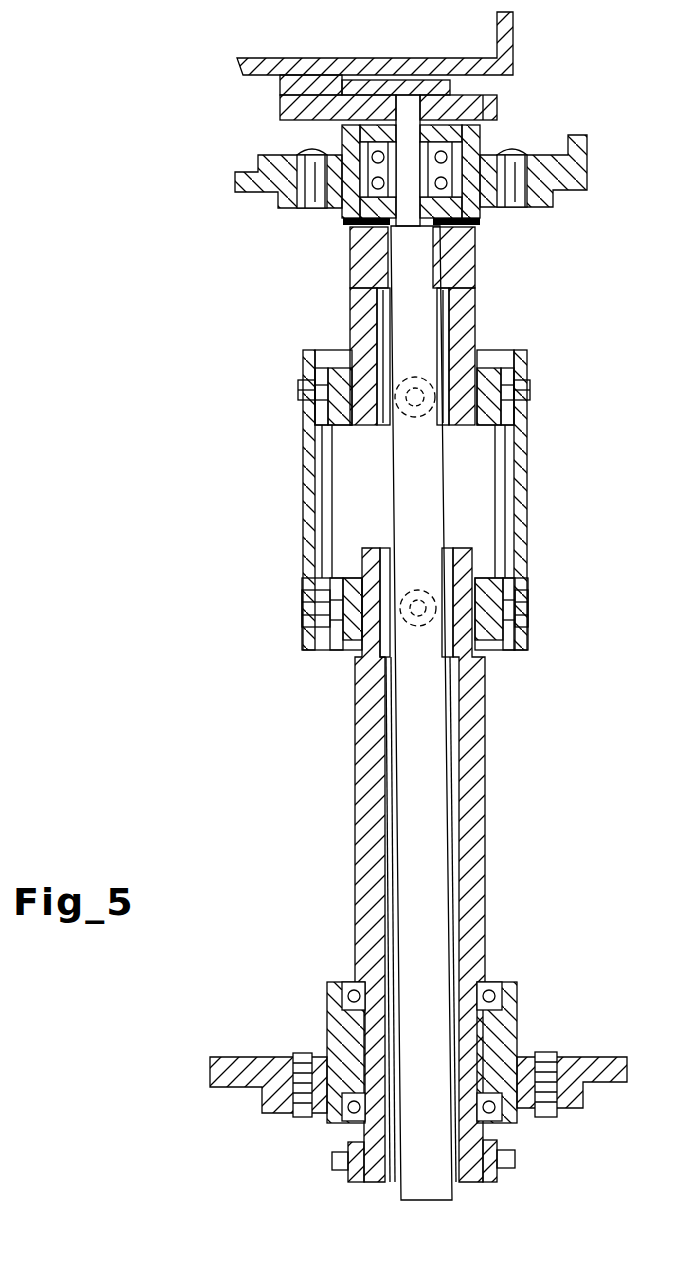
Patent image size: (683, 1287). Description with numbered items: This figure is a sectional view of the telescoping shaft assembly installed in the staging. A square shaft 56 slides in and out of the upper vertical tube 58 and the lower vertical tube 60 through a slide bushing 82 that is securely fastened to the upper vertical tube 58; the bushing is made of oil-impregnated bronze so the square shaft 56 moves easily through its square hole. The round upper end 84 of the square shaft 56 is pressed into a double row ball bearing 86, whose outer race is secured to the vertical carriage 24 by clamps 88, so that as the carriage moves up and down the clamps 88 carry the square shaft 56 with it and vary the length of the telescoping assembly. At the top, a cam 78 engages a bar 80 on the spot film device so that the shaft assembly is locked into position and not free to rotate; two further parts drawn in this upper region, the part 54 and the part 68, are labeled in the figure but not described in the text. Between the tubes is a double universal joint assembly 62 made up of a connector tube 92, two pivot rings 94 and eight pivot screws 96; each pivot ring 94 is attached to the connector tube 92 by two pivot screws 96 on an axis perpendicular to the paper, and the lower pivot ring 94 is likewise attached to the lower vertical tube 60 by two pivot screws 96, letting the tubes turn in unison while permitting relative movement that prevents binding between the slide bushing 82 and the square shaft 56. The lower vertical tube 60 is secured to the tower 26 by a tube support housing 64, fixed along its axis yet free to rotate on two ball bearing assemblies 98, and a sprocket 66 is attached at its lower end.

The vertical carriage 24 is at (590, 157).
The tower 26 is at (597, 1057).
The upper drive shaft 54 is at (500, 106).
The square shaft 56 is at (437, 852).
The upper vertical tube 58 is at (477, 316).
The lower vertical tube 60 is at (474, 785).
The double universal joint assembly 62 is at (527, 521).
The tube support housing 64 is at (510, 1020).
The sprocket 66 is at (356, 1183).
The hub plate 68 is at (282, 110).
The cam 78 is at (395, 68).
The bar 80 is at (282, 86).
The slide bushing 82 is at (475, 266).
The round upper end 84 is at (432, 109).
The double row ball bearing 86 is at (455, 152).
The clamps 88 is at (345, 140).
The connector tube 92 is at (523, 453).
The pivot rings 94 is at (500, 350).
The pivot screws 96 is at (303, 393).
The ball bearing assemblies 98 is at (347, 983).